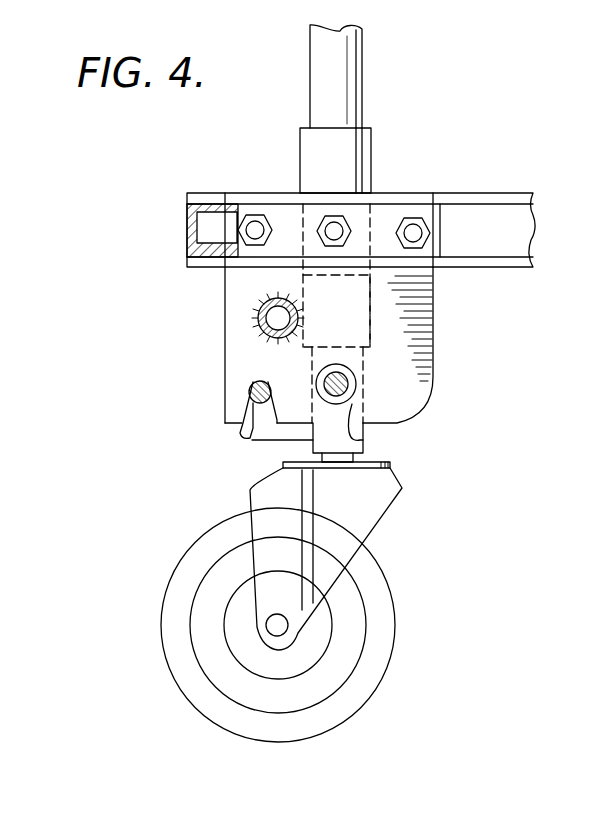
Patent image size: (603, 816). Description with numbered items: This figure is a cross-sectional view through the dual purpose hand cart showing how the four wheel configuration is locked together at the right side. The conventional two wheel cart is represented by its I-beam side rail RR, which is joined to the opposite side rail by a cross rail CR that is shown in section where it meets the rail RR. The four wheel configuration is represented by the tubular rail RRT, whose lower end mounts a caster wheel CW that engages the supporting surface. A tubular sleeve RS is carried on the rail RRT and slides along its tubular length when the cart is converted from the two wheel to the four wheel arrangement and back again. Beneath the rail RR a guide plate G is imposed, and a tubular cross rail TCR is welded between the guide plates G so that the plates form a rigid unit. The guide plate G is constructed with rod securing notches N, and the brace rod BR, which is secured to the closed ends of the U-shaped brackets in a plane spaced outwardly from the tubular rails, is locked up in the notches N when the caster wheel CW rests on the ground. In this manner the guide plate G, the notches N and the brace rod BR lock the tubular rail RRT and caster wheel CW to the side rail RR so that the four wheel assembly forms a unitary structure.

The right tubular side rail RRT is at (363, 48).
The tubular sleeve RS is at (372, 160).
The right side rail RR is at (520, 193).
The cross rail CR is at (187, 228).
The guide plate G is at (435, 313).
The tubular cross rail TCR is at (253, 315).
The brace rod BR is at (250, 390).
The rod securing notch N is at (248, 438).
The caster wheel CW is at (385, 500).